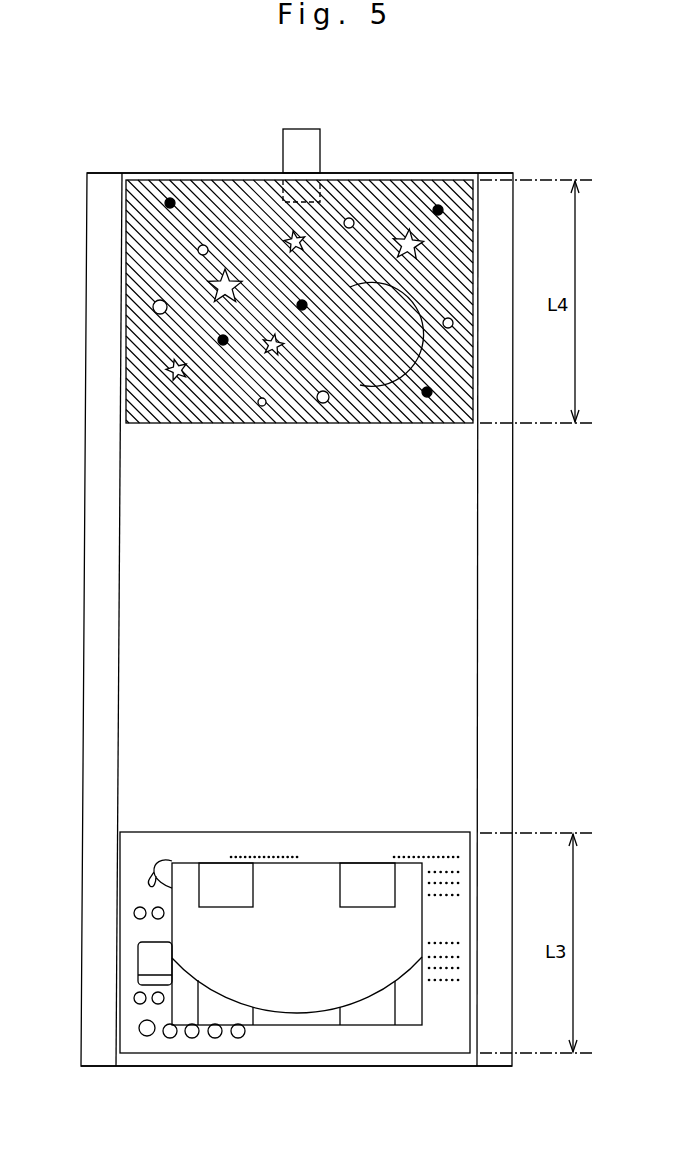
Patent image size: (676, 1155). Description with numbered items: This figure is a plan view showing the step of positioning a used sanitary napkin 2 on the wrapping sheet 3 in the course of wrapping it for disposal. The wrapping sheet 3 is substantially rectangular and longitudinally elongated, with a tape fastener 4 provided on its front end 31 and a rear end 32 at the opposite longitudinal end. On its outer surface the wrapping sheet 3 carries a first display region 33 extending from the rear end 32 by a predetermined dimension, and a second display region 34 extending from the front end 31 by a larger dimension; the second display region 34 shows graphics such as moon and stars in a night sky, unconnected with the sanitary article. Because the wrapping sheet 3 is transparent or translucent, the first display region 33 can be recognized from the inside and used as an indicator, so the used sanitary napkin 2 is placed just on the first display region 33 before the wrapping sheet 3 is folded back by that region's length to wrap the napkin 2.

The sanitary napkin 2 is at (180, 934).
The wrapping sheet 3 is at (95, 540).
The tape fastener 4 is at (310, 146).
The front end 31 is at (146, 172).
The rear end 32 is at (148, 1067).
The first display region 33 is at (120, 833).
The second display region 34 is at (128, 284).